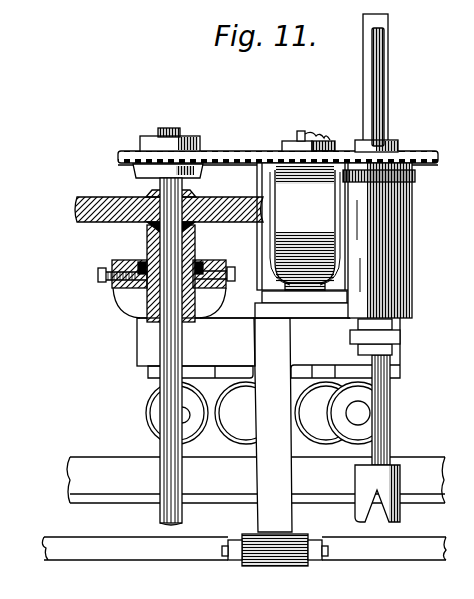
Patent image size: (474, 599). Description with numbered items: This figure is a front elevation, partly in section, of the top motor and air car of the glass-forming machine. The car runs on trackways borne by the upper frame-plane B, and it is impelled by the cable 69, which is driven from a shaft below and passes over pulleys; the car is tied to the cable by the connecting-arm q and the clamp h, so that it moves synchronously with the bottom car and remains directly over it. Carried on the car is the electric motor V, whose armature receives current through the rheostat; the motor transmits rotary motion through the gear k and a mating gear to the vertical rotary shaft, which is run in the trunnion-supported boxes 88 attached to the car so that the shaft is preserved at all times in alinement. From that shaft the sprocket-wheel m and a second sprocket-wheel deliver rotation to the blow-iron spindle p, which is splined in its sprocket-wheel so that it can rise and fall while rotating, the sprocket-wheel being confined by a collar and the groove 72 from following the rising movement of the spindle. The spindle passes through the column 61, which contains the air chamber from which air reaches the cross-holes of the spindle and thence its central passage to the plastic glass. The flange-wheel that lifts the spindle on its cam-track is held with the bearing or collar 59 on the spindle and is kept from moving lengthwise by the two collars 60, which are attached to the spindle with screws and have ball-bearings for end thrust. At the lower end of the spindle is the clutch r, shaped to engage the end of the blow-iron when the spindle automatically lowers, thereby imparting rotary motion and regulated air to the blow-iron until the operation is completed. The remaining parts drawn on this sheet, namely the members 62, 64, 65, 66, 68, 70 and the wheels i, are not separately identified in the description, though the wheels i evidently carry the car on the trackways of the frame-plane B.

The bearing or collar 59 is at (400, 337).
The collars 60 is at (392, 323).
The column 61 is at (395, 240).
The bearing block 62 is at (200, 273).
The bolt 64 is at (151, 274).
The frame block 65 is at (243, 342).
The bearing block 66 is at (137, 273).
The chain rack 68 is at (244, 150).
The cable 69 is at (244, 548).
The rod 70 is at (372, 62).
The groove 72 is at (392, 182).
The trunnion-supported boxes 88 is at (147, 305).
The blow-iron spindle p is at (386, 272).
The clutch r is at (377, 497).
The connecting-arms q is at (273, 425).
The clamps h is at (275, 564).
The frame-plane B is at (256, 480).
The wheel i is at (267, 413).
The gear k is at (169, 205).
The sprocket-wheel m is at (176, 153).
The electric motor V is at (302, 240).